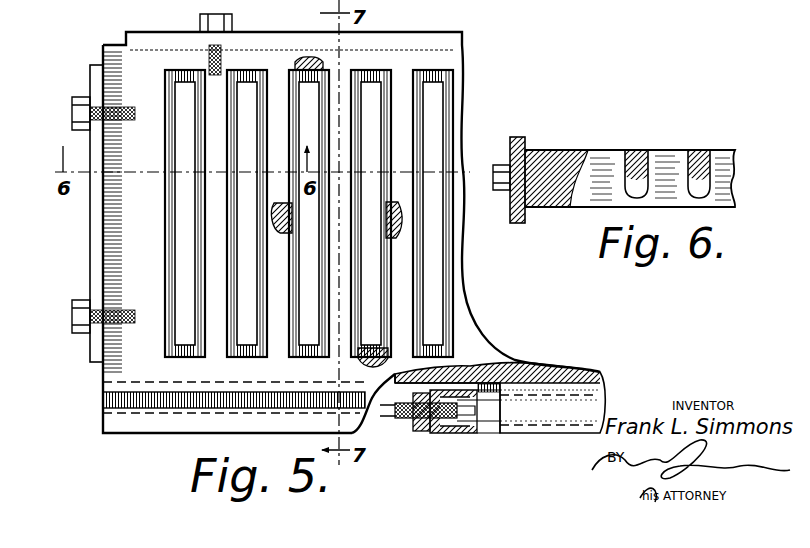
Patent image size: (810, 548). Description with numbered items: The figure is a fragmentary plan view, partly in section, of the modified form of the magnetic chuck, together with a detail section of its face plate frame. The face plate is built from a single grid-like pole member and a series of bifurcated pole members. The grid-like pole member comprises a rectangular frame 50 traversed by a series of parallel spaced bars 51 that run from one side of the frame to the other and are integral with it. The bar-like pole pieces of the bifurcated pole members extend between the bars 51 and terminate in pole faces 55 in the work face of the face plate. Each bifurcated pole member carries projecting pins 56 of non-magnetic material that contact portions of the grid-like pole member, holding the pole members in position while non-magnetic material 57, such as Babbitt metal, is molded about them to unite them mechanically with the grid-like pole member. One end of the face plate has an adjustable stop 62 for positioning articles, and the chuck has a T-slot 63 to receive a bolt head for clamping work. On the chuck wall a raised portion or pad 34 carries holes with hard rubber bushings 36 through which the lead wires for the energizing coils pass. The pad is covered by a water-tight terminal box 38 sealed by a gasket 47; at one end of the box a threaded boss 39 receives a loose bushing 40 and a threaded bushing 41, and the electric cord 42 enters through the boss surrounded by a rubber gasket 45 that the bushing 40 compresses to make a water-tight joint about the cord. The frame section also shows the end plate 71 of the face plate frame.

In FIG. 5, the rectangular frame 50 is at (267, 64).
In FIG. 6, the rectangular frame 50 is at (560, 150).
In FIG. 5, the parallel spaced bars 51 is at (309, 213).
In FIG. 6, the parallel spaced bars 51 is at (684, 152).
In FIG. 5, the pole faces 55 is at (313, 213).
In FIG. 5, the projecting pins 56 is at (386, 219).
In FIG. 5, the non-magnetic material 57 is at (445, 307).
In FIG. 5, the adjustable stop 62 is at (98, 243).
In FIG. 5, the T-slot 63 is at (110, 398).
In FIG. 5, the gasket 47 is at (577, 370).
In FIG. 5, the electric cord 42 is at (407, 426).
In FIG. 5, the threaded bushing 41 is at (423, 436).
In FIG. 5, the loose bushing 40 is at (455, 436).
In FIG. 5, the threaded boss 39 is at (440, 436).
In FIG. 5, the rubber gasket 45 is at (472, 433).
In FIG. 5, the terminal box 38 is at (503, 443).
In FIG. 6, the end plate 71 is at (516, 137).
In FIG. 6, the raised portion or pad 34 is at (489, 0).
In FIG. 6, the bushing 36 is at (575, 0).